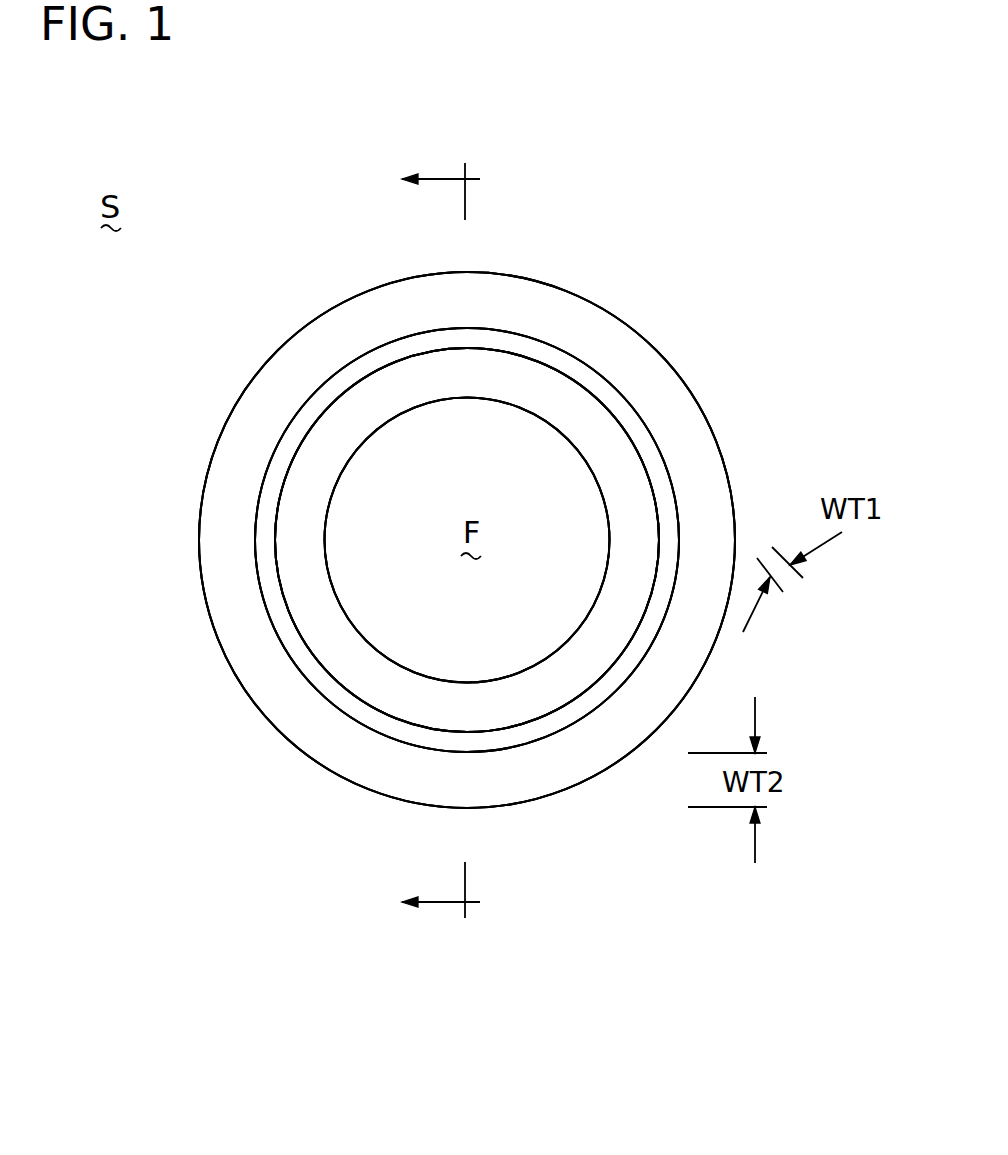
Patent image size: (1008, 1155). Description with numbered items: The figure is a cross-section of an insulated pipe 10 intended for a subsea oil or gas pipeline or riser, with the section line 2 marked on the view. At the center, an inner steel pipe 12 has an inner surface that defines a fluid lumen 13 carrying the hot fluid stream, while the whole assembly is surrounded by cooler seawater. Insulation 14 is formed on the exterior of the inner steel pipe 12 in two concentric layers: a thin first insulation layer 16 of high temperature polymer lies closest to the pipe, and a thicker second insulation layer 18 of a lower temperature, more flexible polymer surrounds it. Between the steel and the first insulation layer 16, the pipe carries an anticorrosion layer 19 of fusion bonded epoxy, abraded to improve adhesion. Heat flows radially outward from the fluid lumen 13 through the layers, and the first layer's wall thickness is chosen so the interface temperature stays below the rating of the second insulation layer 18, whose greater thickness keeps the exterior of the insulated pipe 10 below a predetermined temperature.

The insulated pipe 10 is at (685, 907).
The inner steel pipe 12 is at (298, 490).
The fluid lumen 13 is at (321, 539).
The insulation 14 is at (290, 745).
The first insulation layer 16 is at (325, 385).
The second insulation layer 18 is at (342, 322).
The anticorrosion layer 19 is at (303, 428).
The section line 2- 2 is at (448, 543).